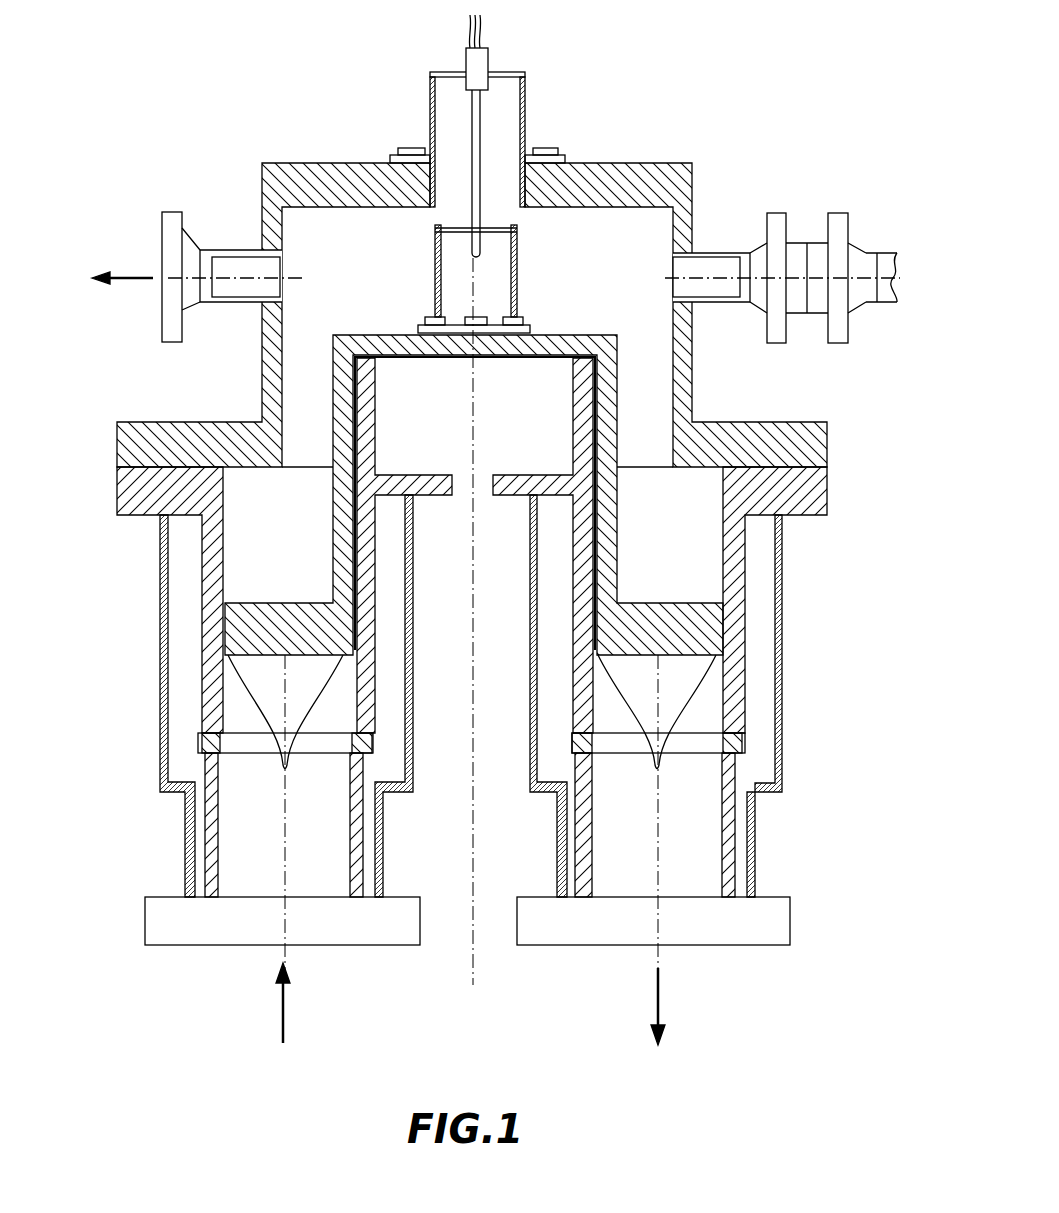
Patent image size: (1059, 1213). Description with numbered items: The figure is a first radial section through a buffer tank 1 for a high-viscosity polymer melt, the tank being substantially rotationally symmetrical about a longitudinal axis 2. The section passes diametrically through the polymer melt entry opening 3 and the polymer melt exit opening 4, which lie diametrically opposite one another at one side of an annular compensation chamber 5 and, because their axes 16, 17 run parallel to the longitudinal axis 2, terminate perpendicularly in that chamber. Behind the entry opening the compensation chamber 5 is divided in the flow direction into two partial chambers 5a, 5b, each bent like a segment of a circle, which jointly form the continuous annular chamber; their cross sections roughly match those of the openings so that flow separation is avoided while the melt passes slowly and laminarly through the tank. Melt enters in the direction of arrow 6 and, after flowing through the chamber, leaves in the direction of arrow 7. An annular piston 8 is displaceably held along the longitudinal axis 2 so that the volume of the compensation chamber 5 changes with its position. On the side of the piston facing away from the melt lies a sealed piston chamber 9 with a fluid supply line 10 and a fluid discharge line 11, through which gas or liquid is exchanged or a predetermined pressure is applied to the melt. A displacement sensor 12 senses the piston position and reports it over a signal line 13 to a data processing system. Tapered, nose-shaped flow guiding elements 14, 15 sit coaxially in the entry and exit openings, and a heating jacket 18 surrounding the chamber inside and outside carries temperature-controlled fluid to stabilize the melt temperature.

The buffer tank 1 is at (172, 126).
The longitudinal axis 2 is at (472, 960).
The polymer melt entry opening 3 is at (244, 900).
The polymer melt exit opening 4 is at (698, 900).
The compensation chamber 5 is at (510, 707).
The partial chamber 5a is at (767, 709).
The partial chamber 5b is at (712, 693).
The arrow 6 is at (283, 1003).
The arrow 7 is at (660, 1003).
The annular piston 8 is at (693, 620).
The piston chamber 9 is at (615, 285).
The fluid supply line 10 is at (713, 266).
The fluid discharge line 11 is at (190, 255).
The displacement sensor 12 is at (484, 226).
The signal line 13 is at (483, 35).
The flow guiding element 14 is at (282, 745).
The nose 15 is at (670, 750).
The axis of the polymer melt entry opening 16 is at (272, 827).
The axis of the polymer melt exit opening 17 is at (417, 628).
The heating jacket 18 is at (162, 568).